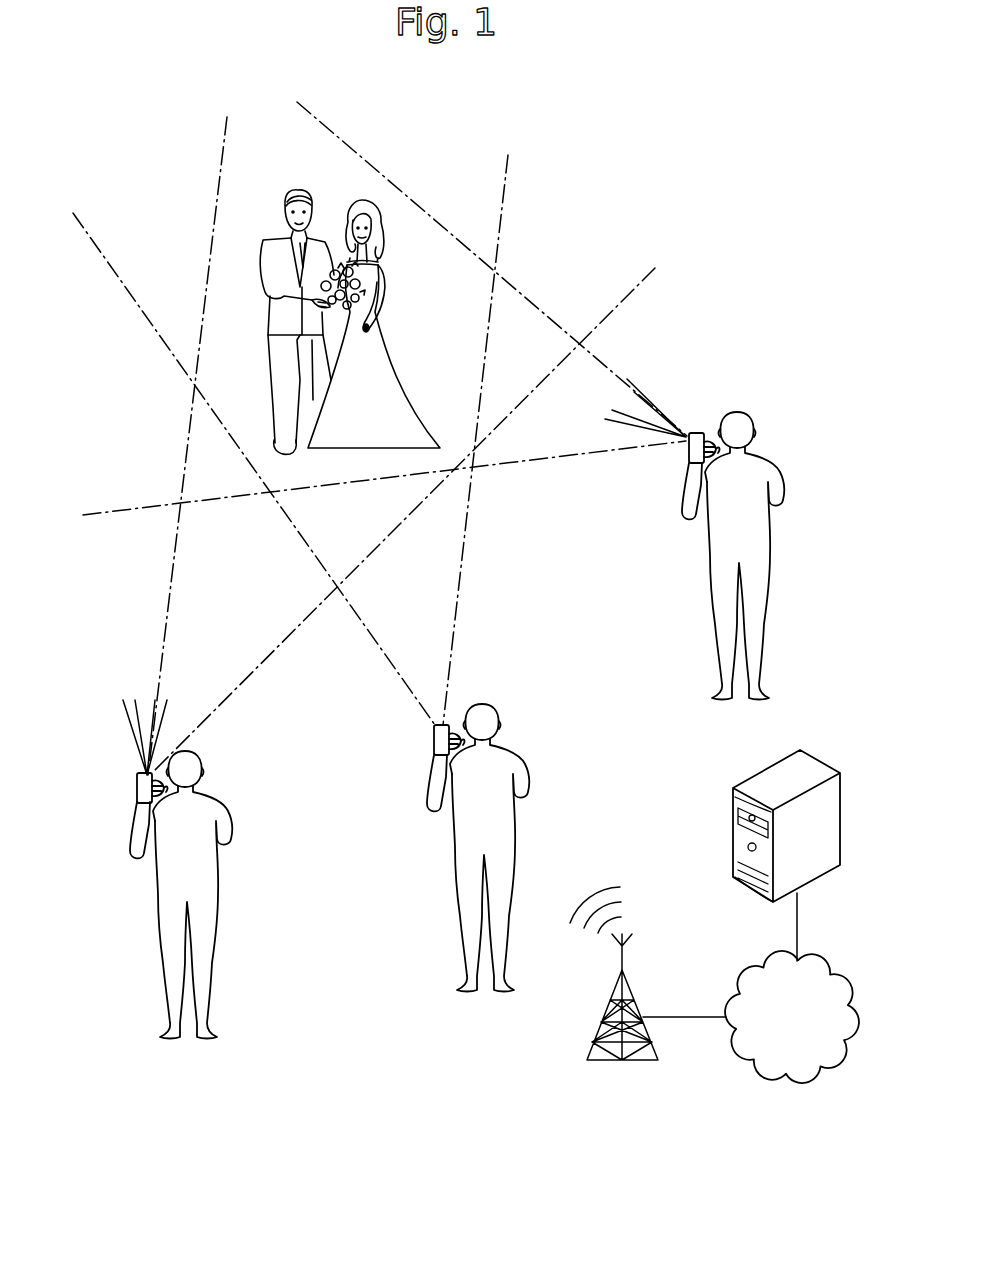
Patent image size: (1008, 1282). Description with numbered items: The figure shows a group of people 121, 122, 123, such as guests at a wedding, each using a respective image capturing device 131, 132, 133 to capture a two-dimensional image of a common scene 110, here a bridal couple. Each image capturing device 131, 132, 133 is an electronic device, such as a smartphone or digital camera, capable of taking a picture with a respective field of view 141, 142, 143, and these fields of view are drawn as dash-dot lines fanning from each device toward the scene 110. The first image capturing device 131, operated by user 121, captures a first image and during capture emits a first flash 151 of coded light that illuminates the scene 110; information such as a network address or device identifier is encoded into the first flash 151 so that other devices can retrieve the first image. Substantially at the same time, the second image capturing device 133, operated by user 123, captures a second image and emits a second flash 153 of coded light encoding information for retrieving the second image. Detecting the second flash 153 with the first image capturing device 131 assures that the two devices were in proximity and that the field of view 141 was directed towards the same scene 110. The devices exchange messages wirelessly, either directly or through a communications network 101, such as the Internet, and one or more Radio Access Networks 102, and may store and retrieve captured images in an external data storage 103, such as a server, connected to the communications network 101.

The communications network 101 is at (785, 1085).
The Radio Access Network 102 is at (590, 1050).
The external data storage 103 is at (750, 790).
The scene 110 is at (263, 151).
The user 121 is at (173, 893).
The user 122 is at (460, 845).
The user 123 is at (760, 540).
The first image capturing device 131 is at (135, 793).
The image capturing device 132 is at (433, 737).
The second image capturing device 133 is at (694, 431).
The field of view 141 is at (161, 649).
The field of view 142 is at (358, 617).
The field of view 143 is at (621, 376).
The first flash 151 is at (128, 750).
The second flash 153 is at (618, 427).